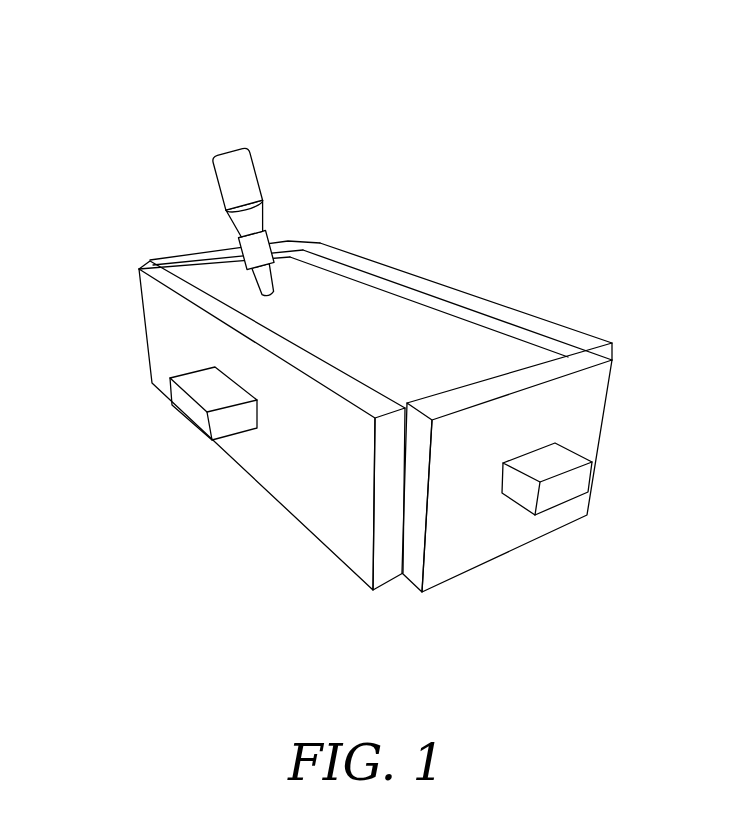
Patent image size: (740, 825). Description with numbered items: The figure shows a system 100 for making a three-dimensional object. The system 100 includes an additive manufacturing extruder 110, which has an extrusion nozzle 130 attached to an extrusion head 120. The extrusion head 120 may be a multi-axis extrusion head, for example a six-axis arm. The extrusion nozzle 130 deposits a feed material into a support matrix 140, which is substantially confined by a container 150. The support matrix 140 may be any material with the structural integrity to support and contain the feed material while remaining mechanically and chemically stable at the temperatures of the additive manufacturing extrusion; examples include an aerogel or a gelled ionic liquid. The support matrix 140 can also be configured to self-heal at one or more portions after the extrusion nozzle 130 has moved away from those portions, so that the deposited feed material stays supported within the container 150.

The system 100 is at (552, 85).
The additive manufacturing extruder 110 is at (308, 144).
The extrusion head 120 is at (190, 229).
The extrusion nozzle 130 is at (270, 280).
The support matrix 140 is at (463, 353).
The container 150 is at (288, 546).